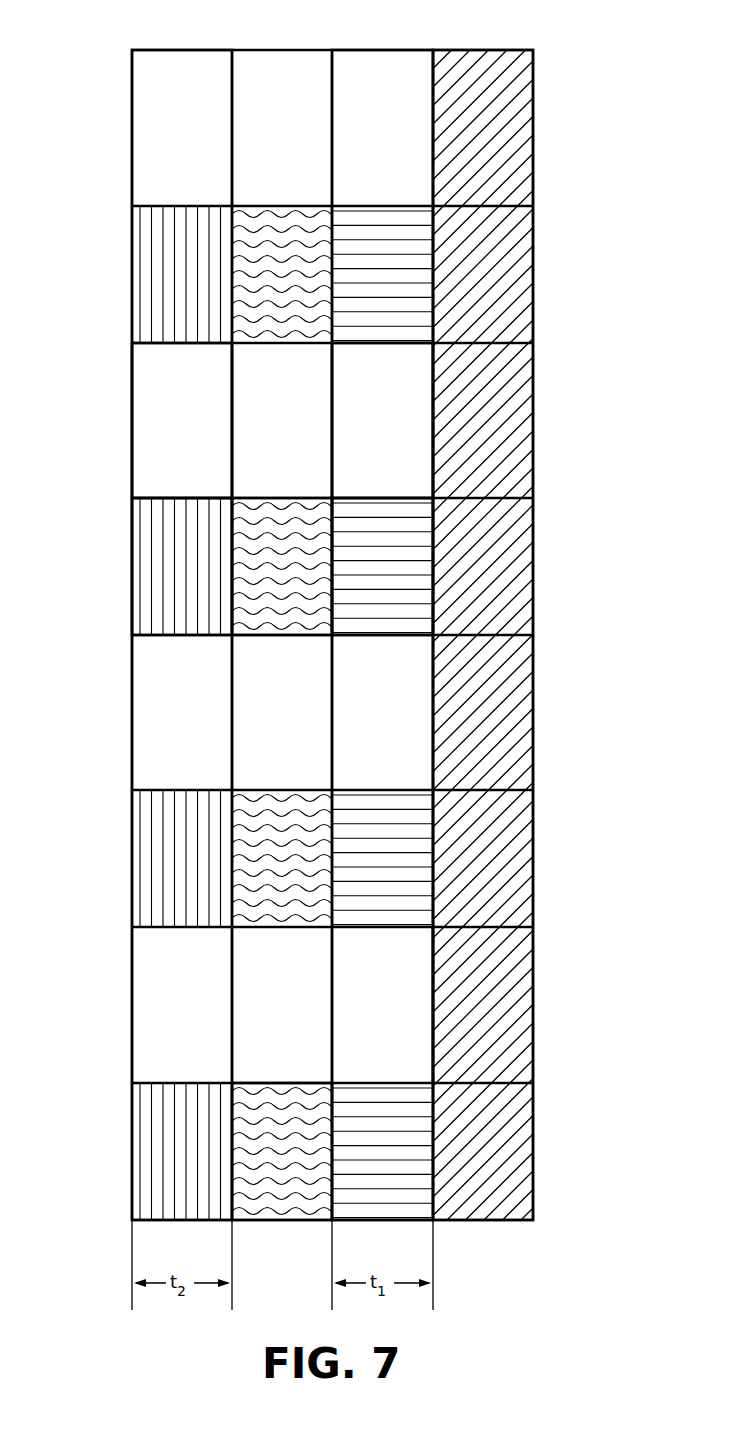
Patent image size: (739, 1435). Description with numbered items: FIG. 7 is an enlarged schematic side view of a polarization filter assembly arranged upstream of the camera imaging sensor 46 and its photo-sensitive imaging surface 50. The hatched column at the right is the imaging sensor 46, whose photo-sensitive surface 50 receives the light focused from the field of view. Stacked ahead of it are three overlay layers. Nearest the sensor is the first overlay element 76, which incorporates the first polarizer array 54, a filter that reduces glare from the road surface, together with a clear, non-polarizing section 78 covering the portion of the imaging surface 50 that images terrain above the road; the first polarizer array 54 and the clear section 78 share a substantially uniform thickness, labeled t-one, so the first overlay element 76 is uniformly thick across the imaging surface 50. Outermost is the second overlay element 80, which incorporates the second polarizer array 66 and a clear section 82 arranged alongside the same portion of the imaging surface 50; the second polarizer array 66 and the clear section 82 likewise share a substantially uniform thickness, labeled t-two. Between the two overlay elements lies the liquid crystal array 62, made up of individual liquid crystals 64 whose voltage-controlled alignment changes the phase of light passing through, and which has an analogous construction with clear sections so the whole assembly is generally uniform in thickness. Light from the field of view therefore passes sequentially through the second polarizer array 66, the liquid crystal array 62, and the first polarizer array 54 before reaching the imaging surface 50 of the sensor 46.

The second overlay element 80 is at (169, 42).
The first overlay element 76 is at (396, 38).
The digital imaging sensor 46 is at (497, 147).
The clear section 82 is at (155, 423).
The clear section 78 is at (400, 428).
The second polarizer array 66 is at (155, 568).
The first polarizer array 54 is at (390, 567).
The liquid crystal 64 is at (278, 608).
The photo-sensitive surface 50 is at (422, 1019).
The liquid crystal array 62 is at (281, 1228).